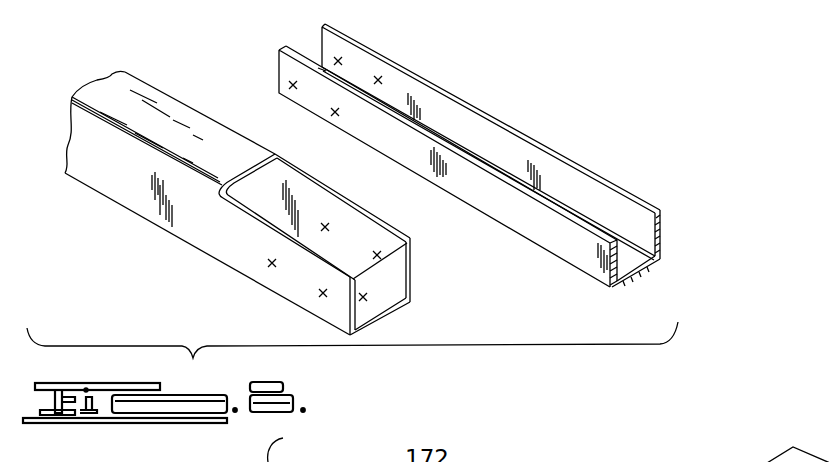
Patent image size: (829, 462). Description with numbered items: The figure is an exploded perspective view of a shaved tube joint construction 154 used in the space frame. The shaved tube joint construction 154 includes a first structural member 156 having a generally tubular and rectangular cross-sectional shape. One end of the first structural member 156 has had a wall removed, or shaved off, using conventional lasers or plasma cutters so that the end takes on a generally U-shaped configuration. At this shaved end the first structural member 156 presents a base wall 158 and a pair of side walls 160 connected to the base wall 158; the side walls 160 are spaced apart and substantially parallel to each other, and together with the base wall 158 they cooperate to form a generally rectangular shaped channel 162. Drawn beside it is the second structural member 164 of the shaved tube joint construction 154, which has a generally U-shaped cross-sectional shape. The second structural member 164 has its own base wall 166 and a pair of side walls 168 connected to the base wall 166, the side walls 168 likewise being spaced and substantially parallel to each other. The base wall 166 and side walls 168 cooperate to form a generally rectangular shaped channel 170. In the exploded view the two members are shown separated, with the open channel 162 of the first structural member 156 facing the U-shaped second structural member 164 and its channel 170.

The shaved tube joint construction 154 is at (162, 56).
The first structural member 156 is at (133, 188).
The base wall 158 is at (410, 313).
The side walls 160 is at (413, 269).
The channel 162 is at (370, 286).
The second structural member 164 is at (558, 258).
The base wall 166 is at (637, 277).
The side walls 168 is at (660, 228).
The channel 170 is at (628, 238).